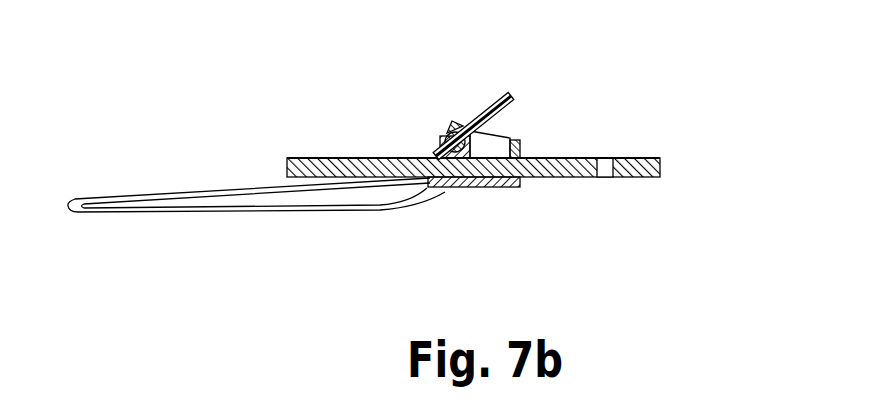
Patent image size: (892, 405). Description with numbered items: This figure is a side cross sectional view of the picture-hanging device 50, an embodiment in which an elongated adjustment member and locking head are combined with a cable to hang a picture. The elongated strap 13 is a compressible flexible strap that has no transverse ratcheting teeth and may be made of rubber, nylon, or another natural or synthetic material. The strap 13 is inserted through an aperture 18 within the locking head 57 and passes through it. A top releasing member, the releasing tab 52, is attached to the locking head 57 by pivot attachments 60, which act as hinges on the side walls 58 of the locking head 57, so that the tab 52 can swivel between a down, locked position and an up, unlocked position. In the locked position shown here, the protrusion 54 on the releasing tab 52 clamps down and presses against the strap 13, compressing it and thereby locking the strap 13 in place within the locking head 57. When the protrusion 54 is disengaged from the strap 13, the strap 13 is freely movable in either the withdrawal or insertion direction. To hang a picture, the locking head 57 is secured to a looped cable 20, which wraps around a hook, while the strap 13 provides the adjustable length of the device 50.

The elongated strap 13 is at (578, 157).
The aperture 18 is at (531, 143).
The looped cable 20 is at (213, 180).
The picture-hanging device 50 is at (535, 161).
The releasing tab 52 is at (483, 106).
The protrusion 54 is at (465, 187).
The locking head 57 is at (430, 158).
The side walls 58 is at (515, 139).
The pivot attachments 60 is at (437, 138).